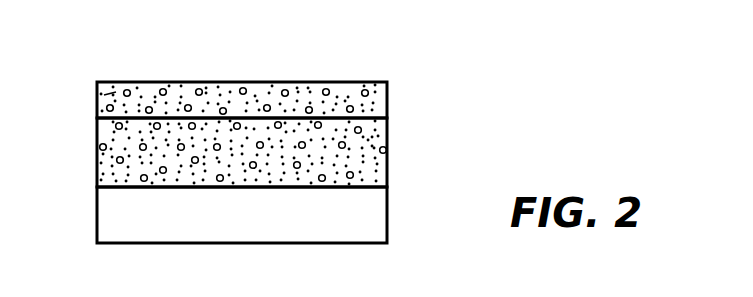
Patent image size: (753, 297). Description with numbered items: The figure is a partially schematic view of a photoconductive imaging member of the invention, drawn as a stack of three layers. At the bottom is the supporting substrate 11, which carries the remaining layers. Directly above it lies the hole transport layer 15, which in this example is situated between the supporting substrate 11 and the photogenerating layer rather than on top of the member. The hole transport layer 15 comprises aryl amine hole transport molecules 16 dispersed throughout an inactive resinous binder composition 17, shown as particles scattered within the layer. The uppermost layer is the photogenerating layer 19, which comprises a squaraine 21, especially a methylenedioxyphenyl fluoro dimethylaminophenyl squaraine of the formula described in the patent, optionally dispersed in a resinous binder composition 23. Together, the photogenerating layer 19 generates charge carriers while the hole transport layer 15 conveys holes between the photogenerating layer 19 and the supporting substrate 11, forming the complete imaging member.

The supporting substrate 11 is at (387, 215).
The hole transport layer 15 is at (387, 175).
The aryl amine hole transport molecules 16 is at (372, 138).
The inactive resinous binder composition 17 is at (118, 161).
The photogenerating layer 19 is at (387, 100).
The squaraine 21 is at (104, 95).
The resinous binder composition 23 is at (163, 89).